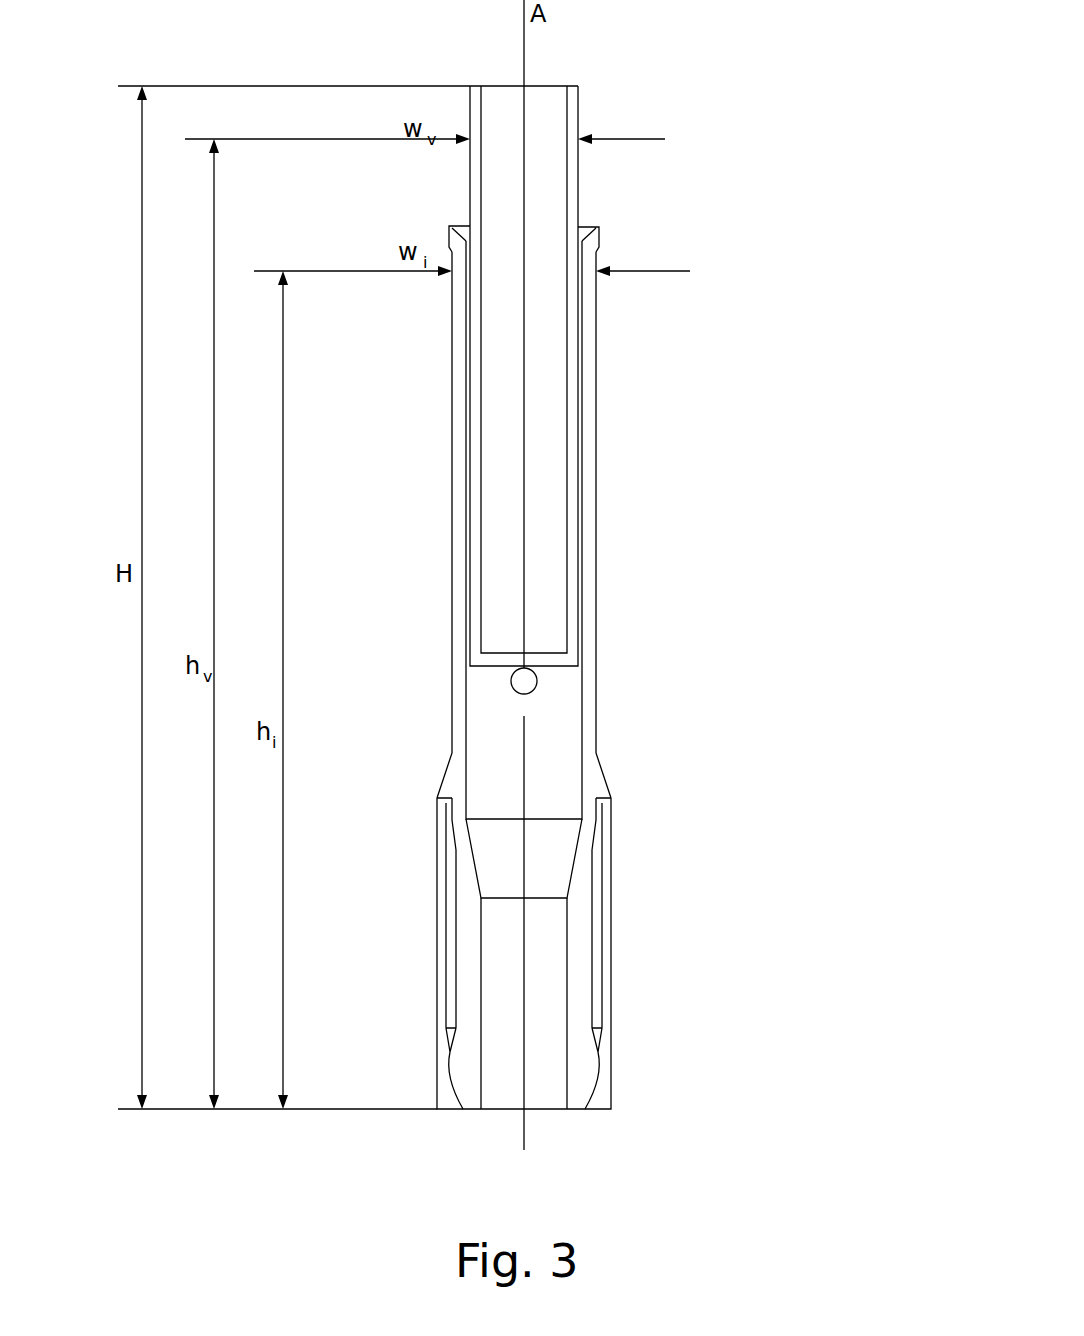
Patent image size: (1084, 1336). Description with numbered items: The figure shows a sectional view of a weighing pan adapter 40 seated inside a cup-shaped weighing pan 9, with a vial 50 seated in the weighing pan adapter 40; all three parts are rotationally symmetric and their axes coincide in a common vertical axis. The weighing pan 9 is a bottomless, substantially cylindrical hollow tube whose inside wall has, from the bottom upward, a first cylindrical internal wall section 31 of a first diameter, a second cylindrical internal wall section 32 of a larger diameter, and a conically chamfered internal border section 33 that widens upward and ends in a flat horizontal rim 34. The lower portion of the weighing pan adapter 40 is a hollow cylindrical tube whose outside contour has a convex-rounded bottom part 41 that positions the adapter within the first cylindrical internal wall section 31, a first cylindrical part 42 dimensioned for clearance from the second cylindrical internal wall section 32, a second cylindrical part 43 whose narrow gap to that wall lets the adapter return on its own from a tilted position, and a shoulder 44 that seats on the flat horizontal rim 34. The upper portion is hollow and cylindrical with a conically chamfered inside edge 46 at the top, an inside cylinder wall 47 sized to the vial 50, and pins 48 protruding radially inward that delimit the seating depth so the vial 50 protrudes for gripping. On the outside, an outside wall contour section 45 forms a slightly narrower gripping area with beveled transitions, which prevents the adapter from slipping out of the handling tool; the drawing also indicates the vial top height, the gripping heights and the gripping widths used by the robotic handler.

The weighing pan 9 is at (612, 917).
The first cylindrical internal wall section 31 is at (600, 1092).
The second cylindrical internal wall section 32 is at (602, 1000).
The conically chamfered internal border section 33 is at (602, 805).
The flat horizontal rim 34 is at (603, 801).
The weighing pan adapter 40 is at (597, 577).
The convex-rounded bottom part 41 is at (452, 1082).
The first cylindrical part 42 is at (450, 999).
The second cylindrical part 43 is at (455, 823).
The shoulder 44 is at (444, 803).
The outside wall contour section 45 is at (597, 305).
The conically chamfered inside edge 46 is at (599, 227).
The inside cylinder wall 47 is at (583, 718).
The pins 48 is at (538, 682).
The vial 50 is at (578, 116).